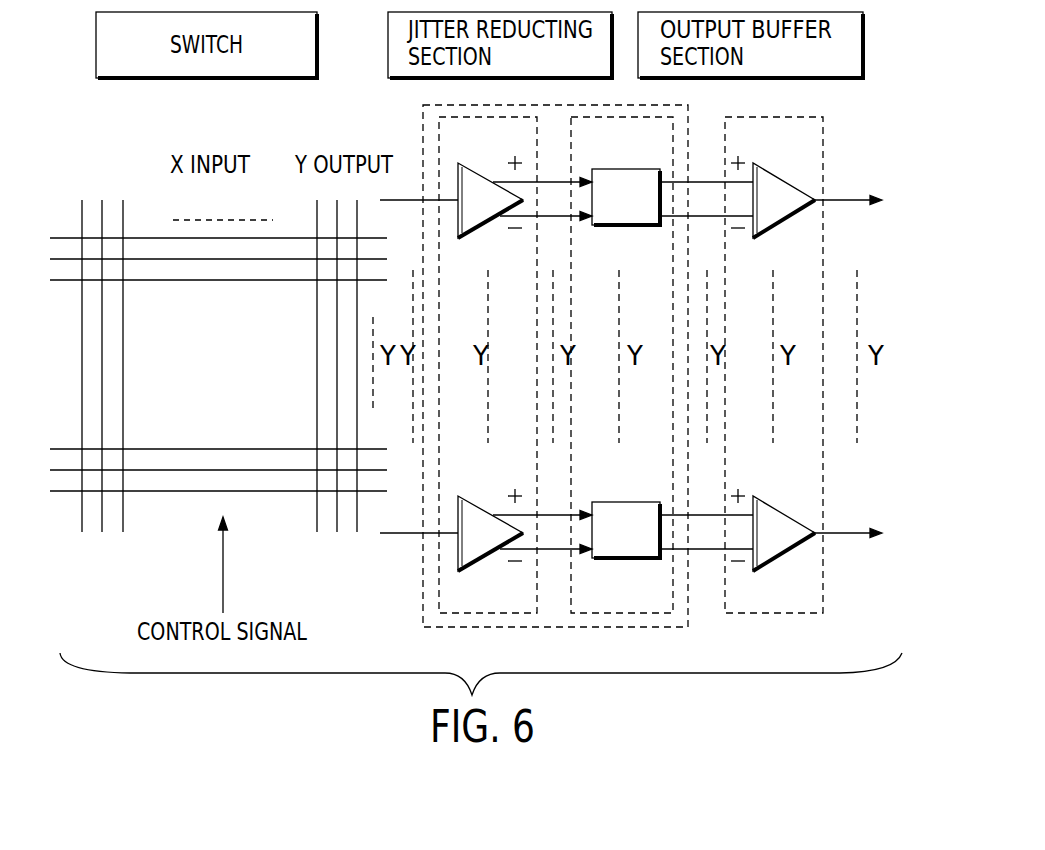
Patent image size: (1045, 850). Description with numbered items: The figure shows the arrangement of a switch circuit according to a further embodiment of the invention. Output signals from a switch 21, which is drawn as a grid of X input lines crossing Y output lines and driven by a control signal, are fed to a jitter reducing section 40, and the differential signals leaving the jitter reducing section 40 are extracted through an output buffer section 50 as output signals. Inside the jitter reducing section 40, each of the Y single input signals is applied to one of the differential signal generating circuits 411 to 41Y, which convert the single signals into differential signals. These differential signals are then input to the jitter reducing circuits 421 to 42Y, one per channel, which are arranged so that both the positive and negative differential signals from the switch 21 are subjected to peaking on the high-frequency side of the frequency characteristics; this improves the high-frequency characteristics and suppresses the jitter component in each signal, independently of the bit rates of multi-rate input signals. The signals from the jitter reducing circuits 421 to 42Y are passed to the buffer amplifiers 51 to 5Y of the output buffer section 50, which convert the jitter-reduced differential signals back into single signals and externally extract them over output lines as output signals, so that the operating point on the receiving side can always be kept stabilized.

The switch 21 is at (355, 540).
The jitter reducing section 40 is at (566, 375).
The differential signal generating circuit 411 is at (486, 172).
The differential signal generating circuit 41Y is at (486, 505).
The jitter reducing circuit 421 is at (612, 226).
The jitter reducing circuit 42Y is at (612, 559).
The output buffer section 50 is at (817, 392).
The buffer amplifier 51 is at (776, 172).
The buffer amplifier 5Y is at (776, 505).